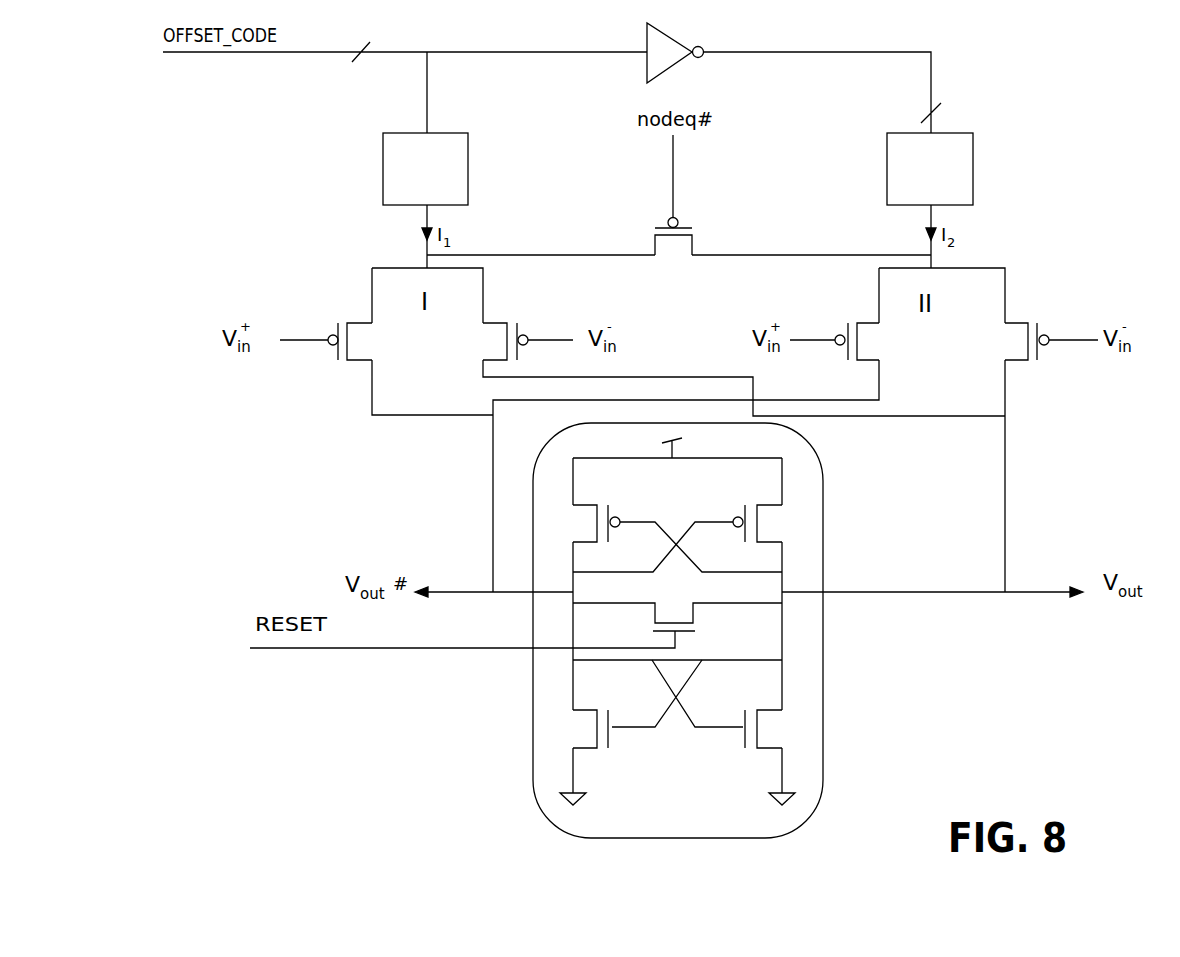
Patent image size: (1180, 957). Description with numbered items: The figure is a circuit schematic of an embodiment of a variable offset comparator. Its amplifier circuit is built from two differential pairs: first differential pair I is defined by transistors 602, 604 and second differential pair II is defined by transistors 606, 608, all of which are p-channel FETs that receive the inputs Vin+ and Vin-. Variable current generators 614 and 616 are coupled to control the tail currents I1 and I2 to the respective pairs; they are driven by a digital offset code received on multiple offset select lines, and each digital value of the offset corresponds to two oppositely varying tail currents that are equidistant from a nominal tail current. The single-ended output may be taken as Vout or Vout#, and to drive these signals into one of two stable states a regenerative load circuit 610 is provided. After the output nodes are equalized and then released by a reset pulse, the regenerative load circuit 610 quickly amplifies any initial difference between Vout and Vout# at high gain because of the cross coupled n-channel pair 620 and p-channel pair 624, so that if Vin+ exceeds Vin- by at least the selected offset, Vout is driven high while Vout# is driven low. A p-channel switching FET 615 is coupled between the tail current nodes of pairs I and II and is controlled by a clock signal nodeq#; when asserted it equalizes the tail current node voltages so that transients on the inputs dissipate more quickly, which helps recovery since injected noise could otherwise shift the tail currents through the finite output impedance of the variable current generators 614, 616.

The transistor 602 is at (385, 355).
The transistor 604 is at (478, 355).
The transistor 606 is at (895, 355).
The transistor 608 is at (990, 355).
The regenerative load circuit 610 is at (712, 630).
The variable current generator 614 is at (468, 143).
The p-channel switching FET 615 is at (697, 240).
The variable current generator 616 is at (996, 130).
The cross coupled n-channel pair 620 is at (720, 744).
The cross coupled p-channel pair 624 is at (737, 498).